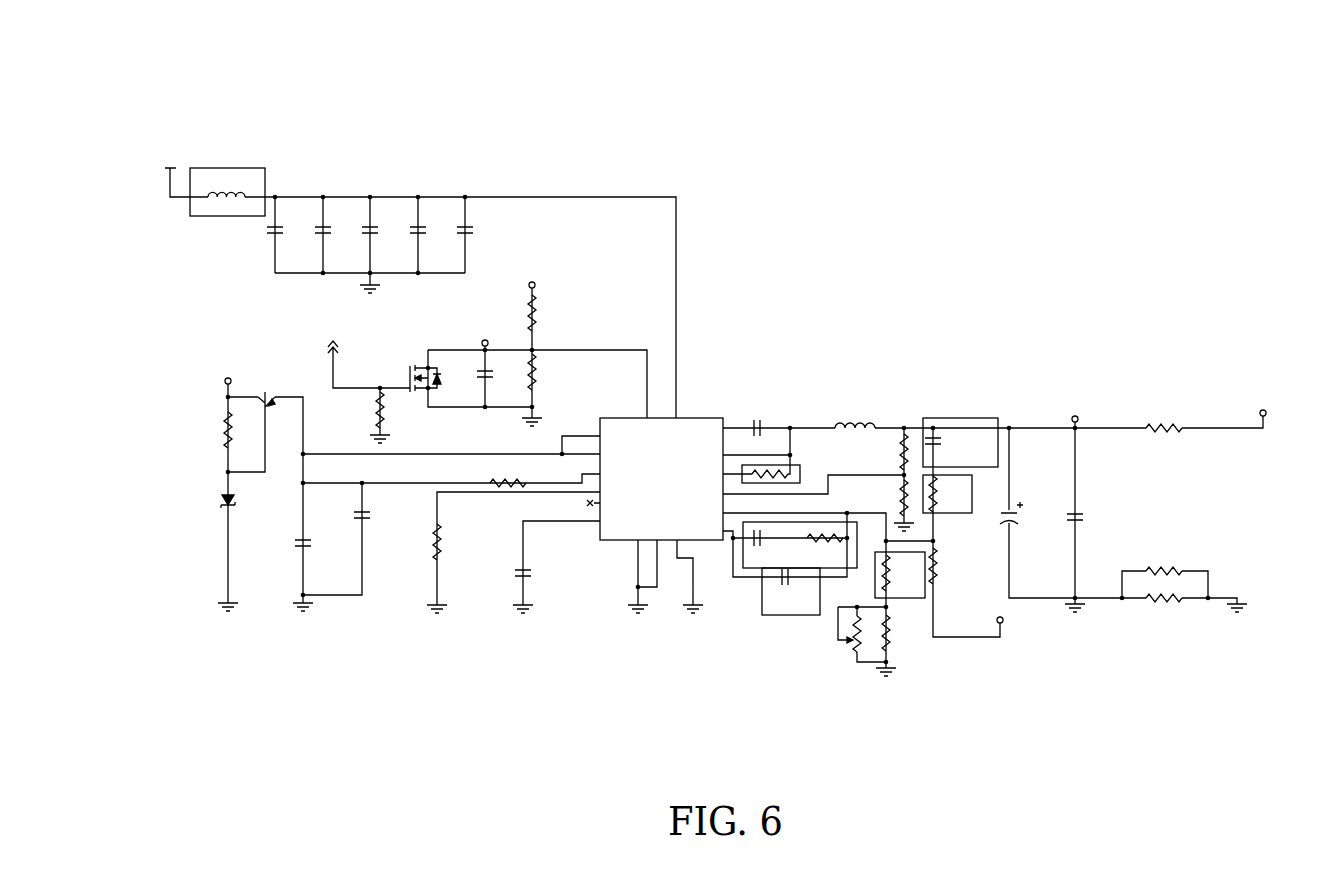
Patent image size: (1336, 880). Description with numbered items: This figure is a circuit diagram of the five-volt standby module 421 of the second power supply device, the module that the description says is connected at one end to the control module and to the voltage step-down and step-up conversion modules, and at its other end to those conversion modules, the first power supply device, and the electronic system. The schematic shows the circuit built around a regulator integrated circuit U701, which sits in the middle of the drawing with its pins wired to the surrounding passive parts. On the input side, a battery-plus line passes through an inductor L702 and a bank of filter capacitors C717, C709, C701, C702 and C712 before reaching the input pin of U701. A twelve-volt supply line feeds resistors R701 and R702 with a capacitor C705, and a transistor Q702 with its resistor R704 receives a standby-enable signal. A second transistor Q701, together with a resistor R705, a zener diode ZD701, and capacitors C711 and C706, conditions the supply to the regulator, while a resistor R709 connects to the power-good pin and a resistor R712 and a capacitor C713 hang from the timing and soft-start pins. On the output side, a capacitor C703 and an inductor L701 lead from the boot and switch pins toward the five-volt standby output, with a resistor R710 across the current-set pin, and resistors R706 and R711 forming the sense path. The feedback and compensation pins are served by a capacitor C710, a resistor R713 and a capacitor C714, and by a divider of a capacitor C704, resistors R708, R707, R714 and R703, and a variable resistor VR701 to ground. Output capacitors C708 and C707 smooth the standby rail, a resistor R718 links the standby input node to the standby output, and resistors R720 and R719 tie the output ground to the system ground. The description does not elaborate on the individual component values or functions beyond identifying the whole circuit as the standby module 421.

The 5V standby module 421 is at (722, 370).
The inductor L702 is at (227, 192).
The capacitor C717 is at (290, 216).
The capacitor C709 is at (338, 246).
The capacitor C701 is at (385, 216).
The capacitor C702 is at (433, 246).
The capacitor C712 is at (480, 216).
The resistor R701 is at (551, 313).
The resistor R702 is at (551, 372).
The capacitor C705 is at (499, 385).
The transistor Q702 is at (426, 359).
The resistor R704 is at (397, 410).
The regulator IC U701 is at (661, 471).
The resistor R709 is at (505, 474).
The resistor R712 is at (455, 542).
The capacitor C713 is at (543, 571).
The capacitor C703 is at (767, 419).
The inductor L701 is at (855, 415).
The resistor R710 is at (771, 479).
The capacitor C710 is at (800, 545).
The resistor R713 is at (825, 549).
The capacitor C714 is at (791, 591).
The resistor R706 is at (885, 452).
The resistor R711 is at (886, 498).
The capacitor C704 is at (960, 442).
The resistor R708 is at (947, 494).
The resistor R707 is at (951, 565).
The resistor R714 is at (900, 575).
The resistor R703 is at (904, 633).
The variable resistor VR701 is at (834, 629).
The capacitor C708 is at (1024, 523).
The capacitor C707 is at (1095, 513).
The resistor R718 is at (1164, 417).
The resistor R720 is at (1164, 560).
The resistor R719 is at (1164, 610).
The transistor Q701 is at (274, 395).
The resistor R705 is at (208, 430).
The zener diode ZD701 is at (255, 497).
The capacitor C711 is at (323, 555).
The capacitor C706 is at (380, 517).